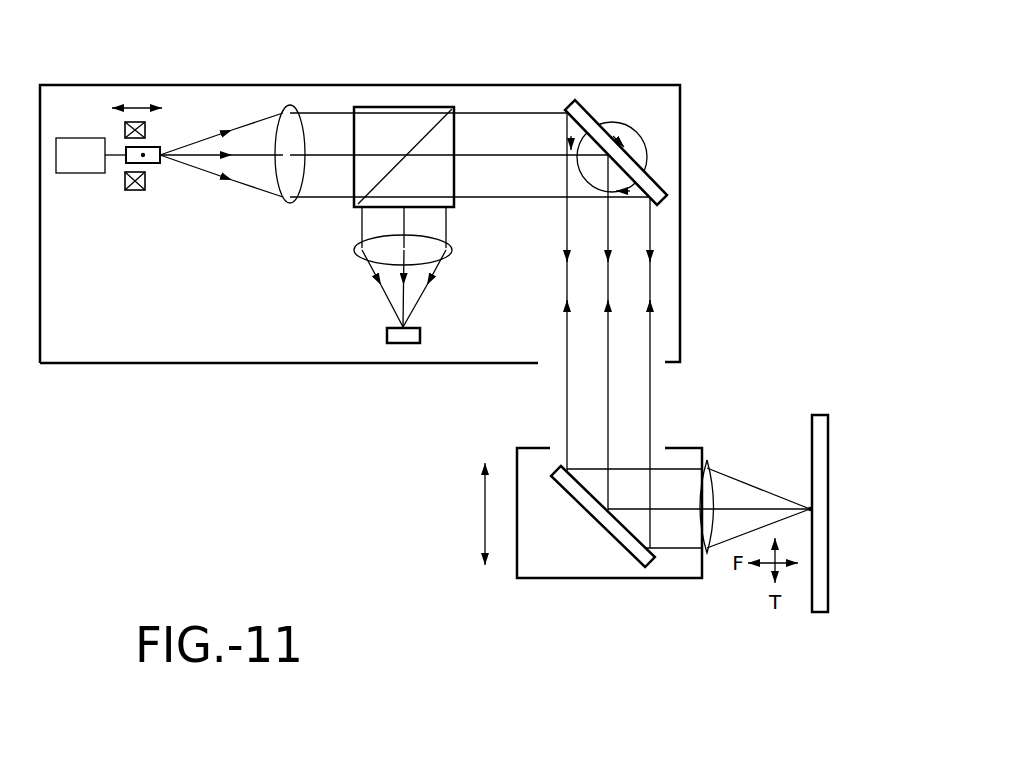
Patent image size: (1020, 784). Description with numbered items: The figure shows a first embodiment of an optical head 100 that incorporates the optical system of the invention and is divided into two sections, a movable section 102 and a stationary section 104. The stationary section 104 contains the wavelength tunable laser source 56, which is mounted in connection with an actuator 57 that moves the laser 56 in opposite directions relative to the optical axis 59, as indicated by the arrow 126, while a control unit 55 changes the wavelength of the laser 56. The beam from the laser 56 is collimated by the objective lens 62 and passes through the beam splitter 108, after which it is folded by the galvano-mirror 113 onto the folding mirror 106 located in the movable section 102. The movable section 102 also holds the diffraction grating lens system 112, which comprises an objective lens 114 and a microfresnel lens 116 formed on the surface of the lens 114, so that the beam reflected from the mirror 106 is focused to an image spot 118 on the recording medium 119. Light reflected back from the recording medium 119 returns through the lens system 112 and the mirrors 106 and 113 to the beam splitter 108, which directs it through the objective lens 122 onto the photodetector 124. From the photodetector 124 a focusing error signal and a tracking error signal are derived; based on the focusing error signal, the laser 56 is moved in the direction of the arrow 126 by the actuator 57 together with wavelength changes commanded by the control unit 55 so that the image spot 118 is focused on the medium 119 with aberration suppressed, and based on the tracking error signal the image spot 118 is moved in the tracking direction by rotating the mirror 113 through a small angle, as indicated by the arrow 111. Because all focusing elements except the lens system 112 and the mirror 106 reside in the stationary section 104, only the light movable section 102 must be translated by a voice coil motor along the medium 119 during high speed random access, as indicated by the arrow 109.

The control unit 55 is at (91, 155).
The laser source 56 is at (153, 146).
The actuator 57 is at (142, 190).
The optical axis 59 is at (500, 157).
The objective lens 62 is at (296, 107).
The optical head 100 is at (733, 98).
The movable section 102 is at (530, 580).
The stationary section 104 is at (247, 365).
The folding mirror 106 is at (610, 538).
The beam splitter 108 is at (385, 107).
The arrow 109 is at (483, 508).
The arrow 111 is at (637, 124).
The diffraction grating lens system 112 is at (683, 556).
The galvano-mirror 113 is at (584, 100).
The objective lens 114 is at (700, 548).
The microfresnel lens 116 is at (713, 550).
The image spot 118 is at (808, 508).
The recording medium 119 is at (818, 413).
The objective lens 122 is at (356, 250).
The photodetector 124 is at (404, 345).
The arrow 126 is at (138, 104).